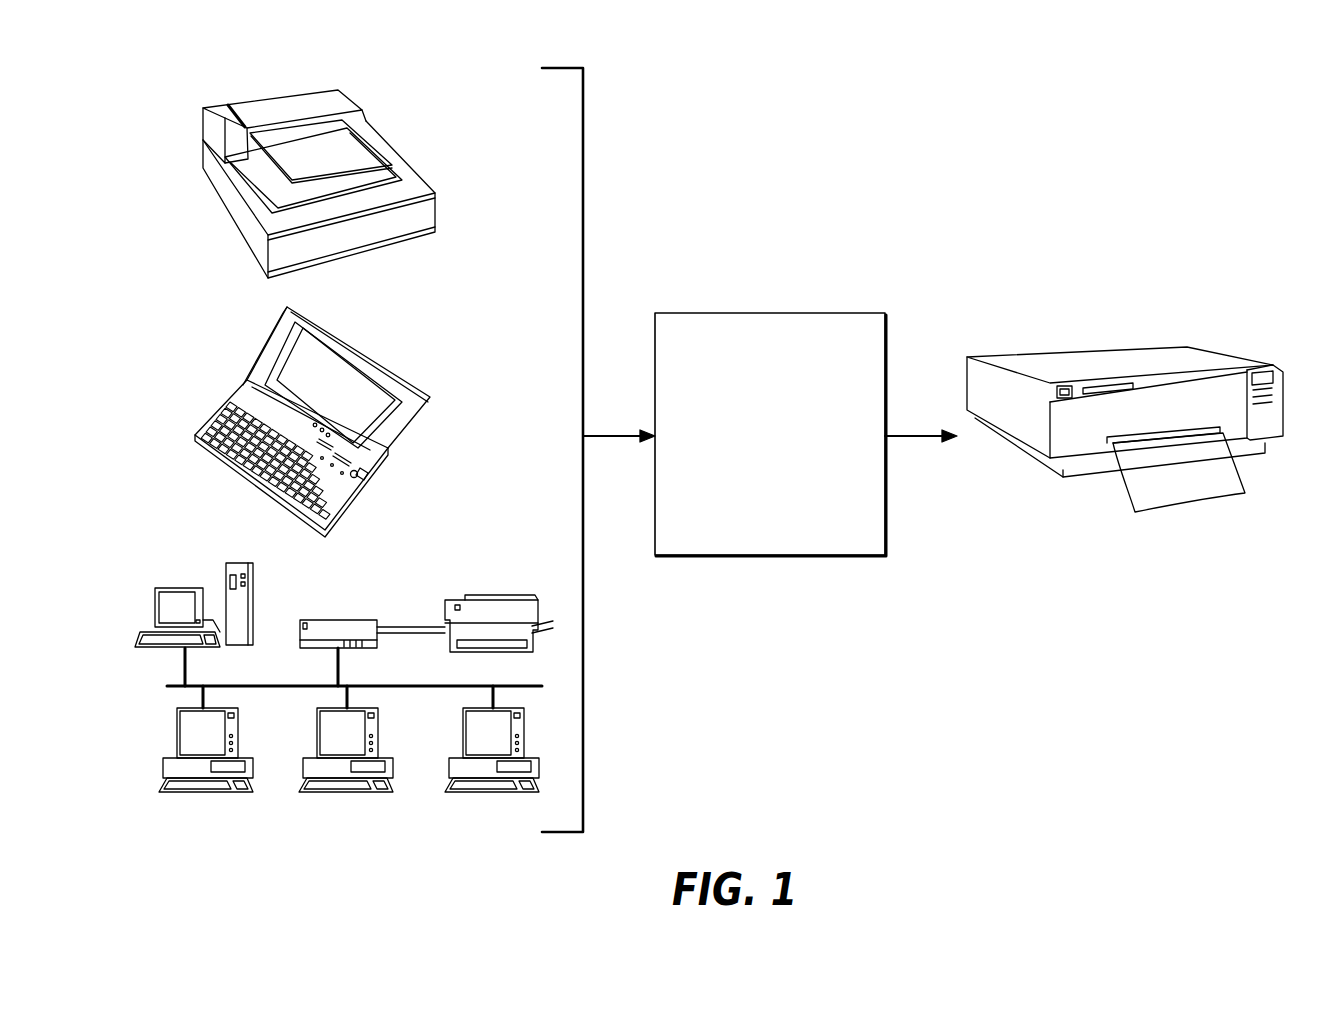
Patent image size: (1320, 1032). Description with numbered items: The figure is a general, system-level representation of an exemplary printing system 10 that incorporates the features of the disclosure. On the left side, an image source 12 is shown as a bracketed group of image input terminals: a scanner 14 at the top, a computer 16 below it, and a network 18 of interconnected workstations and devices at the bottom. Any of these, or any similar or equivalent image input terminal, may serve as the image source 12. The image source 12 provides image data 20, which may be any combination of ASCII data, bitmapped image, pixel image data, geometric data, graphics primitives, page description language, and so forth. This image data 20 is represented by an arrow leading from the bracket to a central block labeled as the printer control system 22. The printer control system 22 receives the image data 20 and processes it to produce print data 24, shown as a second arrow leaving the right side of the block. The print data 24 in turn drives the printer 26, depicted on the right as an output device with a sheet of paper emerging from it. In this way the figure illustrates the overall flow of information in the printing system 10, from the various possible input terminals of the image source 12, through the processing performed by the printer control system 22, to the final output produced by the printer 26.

The printing system 10 is at (832, 152).
The image source 12 is at (351, 58).
The scanner 14 is at (396, 247).
The computer 16 is at (387, 362).
The network 18 is at (334, 810).
The image data 20 is at (609, 431).
The printer control system 22 is at (757, 558).
The print data 24 is at (922, 432).
The printer 26 is at (1087, 477).